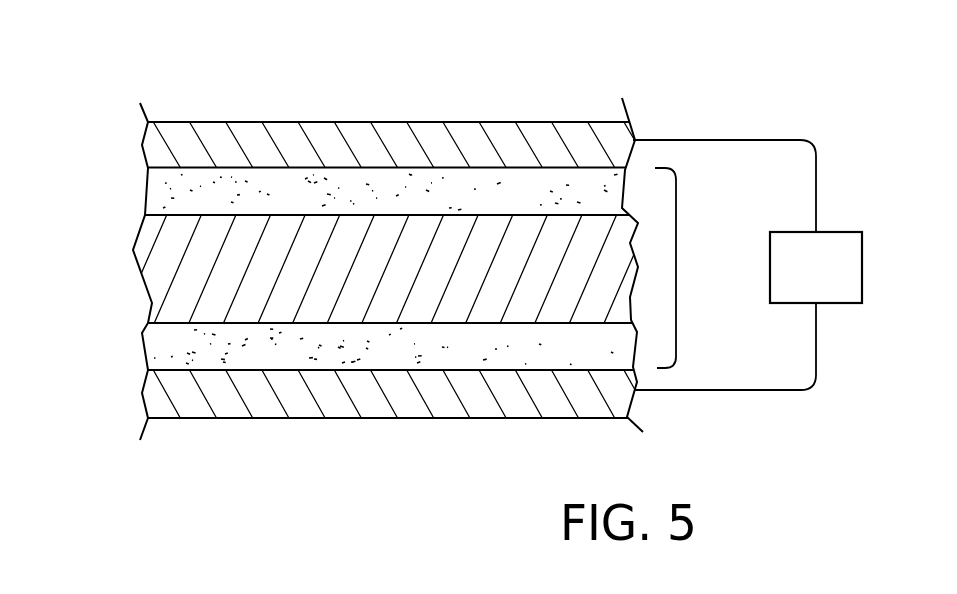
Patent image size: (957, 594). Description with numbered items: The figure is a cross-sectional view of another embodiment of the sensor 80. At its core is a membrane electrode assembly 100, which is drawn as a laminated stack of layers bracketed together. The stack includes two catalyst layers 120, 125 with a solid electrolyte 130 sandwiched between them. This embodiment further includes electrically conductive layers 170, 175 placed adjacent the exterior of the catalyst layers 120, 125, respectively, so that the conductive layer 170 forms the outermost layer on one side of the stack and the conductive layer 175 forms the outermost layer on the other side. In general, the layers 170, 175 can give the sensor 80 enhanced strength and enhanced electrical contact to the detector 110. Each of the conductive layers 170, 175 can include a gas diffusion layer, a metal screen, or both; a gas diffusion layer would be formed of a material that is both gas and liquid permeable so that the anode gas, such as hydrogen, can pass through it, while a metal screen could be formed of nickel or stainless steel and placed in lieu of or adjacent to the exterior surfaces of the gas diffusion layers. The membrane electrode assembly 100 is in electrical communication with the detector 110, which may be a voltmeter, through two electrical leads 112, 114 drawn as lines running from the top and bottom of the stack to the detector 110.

The sensor 80 is at (706, 63).
The membrane electrode assembly 100 is at (410, 273).
The detector 110 is at (837, 283).
The electrical lead 112 is at (743, 140).
The electrical lead 114 is at (753, 391).
The catalyst layer 120 is at (383, 346).
The catalyst layer 125 is at (390, 192).
The solid electrolyte 130 is at (385, 269).
The electrically conductive layer 170 is at (384, 394).
The electrically conductive layer 175 is at (384, 145).